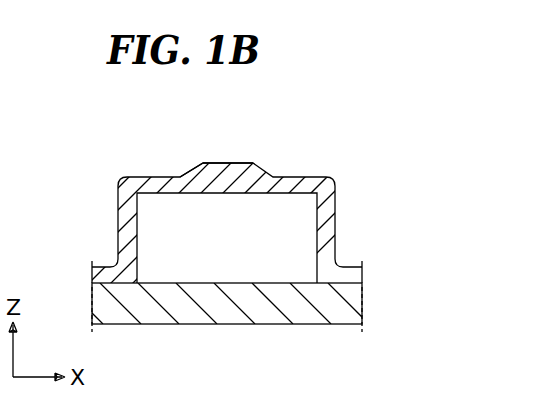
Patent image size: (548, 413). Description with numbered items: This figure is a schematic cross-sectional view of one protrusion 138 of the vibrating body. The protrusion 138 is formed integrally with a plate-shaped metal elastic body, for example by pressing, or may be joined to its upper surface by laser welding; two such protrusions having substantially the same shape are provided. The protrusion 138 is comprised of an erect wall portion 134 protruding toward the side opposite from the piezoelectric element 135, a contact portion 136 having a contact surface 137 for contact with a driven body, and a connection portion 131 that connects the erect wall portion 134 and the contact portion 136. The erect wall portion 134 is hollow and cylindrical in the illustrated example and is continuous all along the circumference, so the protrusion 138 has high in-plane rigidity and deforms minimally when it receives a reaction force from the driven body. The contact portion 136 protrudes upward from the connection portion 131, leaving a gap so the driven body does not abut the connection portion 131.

The connection portion 131 is at (331, 177).
The erect wall portion 134 is at (322, 247).
The piezoelectric element 135 is at (193, 322).
The contact portion 136 is at (245, 163).
The contact surface 137 is at (220, 162).
The protrusion 138 is at (329, 142).